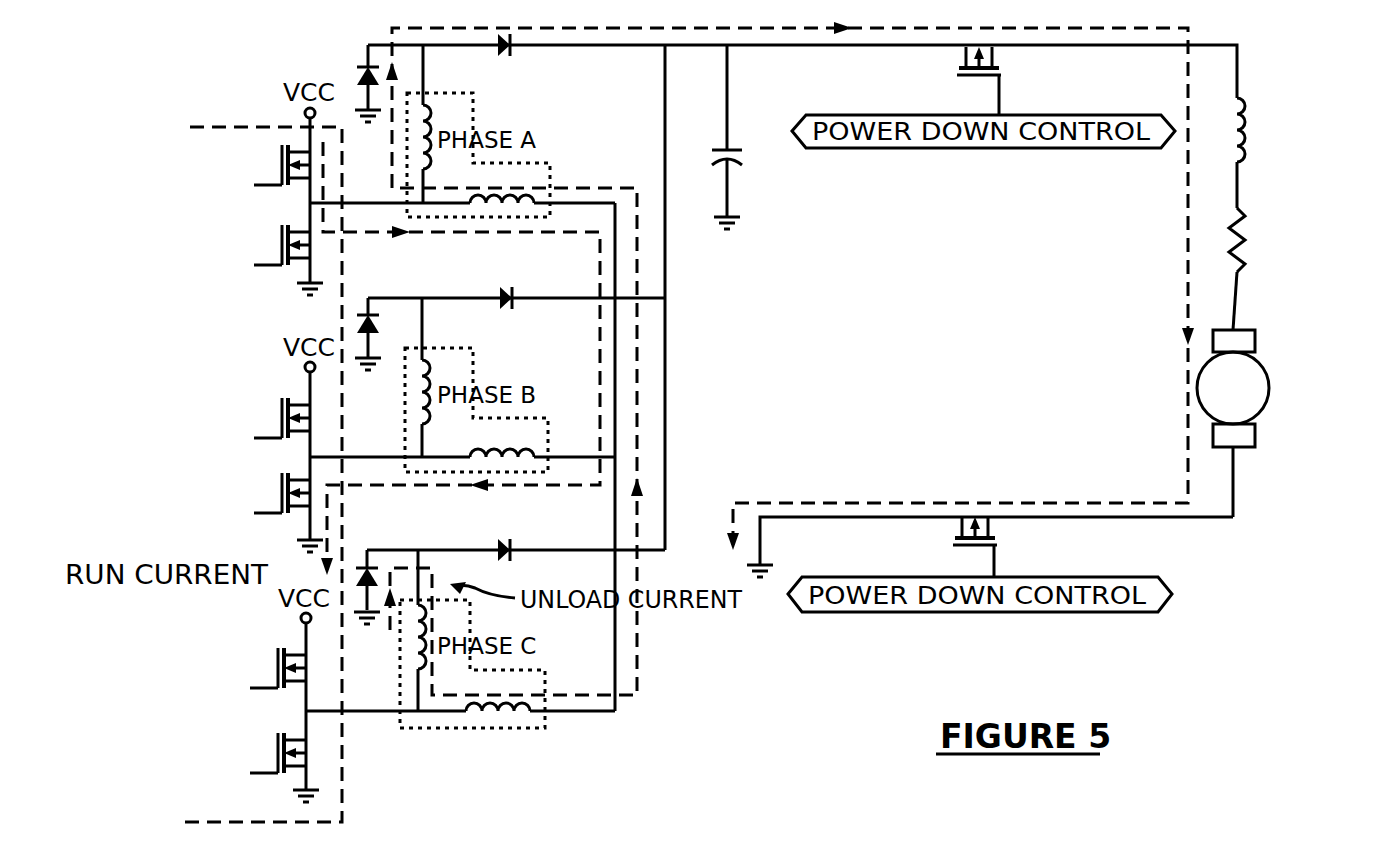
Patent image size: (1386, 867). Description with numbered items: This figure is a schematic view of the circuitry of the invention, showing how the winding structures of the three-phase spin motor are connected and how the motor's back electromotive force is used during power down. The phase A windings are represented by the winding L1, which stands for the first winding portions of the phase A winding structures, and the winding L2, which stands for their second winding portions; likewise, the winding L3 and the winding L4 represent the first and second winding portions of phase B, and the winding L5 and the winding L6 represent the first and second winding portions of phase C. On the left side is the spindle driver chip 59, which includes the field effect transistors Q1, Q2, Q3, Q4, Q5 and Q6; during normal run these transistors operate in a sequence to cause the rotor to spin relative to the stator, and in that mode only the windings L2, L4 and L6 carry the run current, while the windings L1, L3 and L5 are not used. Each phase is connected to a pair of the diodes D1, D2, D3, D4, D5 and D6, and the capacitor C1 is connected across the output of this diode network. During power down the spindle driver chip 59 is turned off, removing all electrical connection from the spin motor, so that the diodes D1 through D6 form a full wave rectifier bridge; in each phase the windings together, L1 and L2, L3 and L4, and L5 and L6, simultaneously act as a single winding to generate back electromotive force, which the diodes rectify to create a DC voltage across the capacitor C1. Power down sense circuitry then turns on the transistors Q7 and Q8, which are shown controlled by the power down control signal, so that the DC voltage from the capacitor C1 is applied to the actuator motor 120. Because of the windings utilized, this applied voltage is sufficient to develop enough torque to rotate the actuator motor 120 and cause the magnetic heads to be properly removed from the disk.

The spindle driver chip 59 is at (380, 755).
The actuator motor 120 is at (1267, 410).
The field effect transistor Q1 is at (276, 160).
The field effect transistor Q2 is at (282, 249).
The field effect transistor Q3 is at (282, 414).
The field effect transistor Q4 is at (288, 504).
The field effect transistor Q5 is at (278, 667).
The field effect transistor Q6 is at (284, 756).
The transistor Q7 is at (997, 81).
The transistor Q8 is at (994, 547).
The diode D1 is at (526, 57).
The diode D2 is at (355, 83).
The diode D3 is at (527, 308).
The diode D4 is at (381, 334).
The diode D5 is at (525, 561).
The diode D6 is at (366, 572).
The winding L1 is at (443, 124).
The winding L2 is at (462, 184).
The winding L3 is at (443, 377).
The winding L4 is at (462, 440).
The winding L5 is at (441, 630).
The winding L6 is at (460, 691).
The capacitor C1 is at (746, 137).